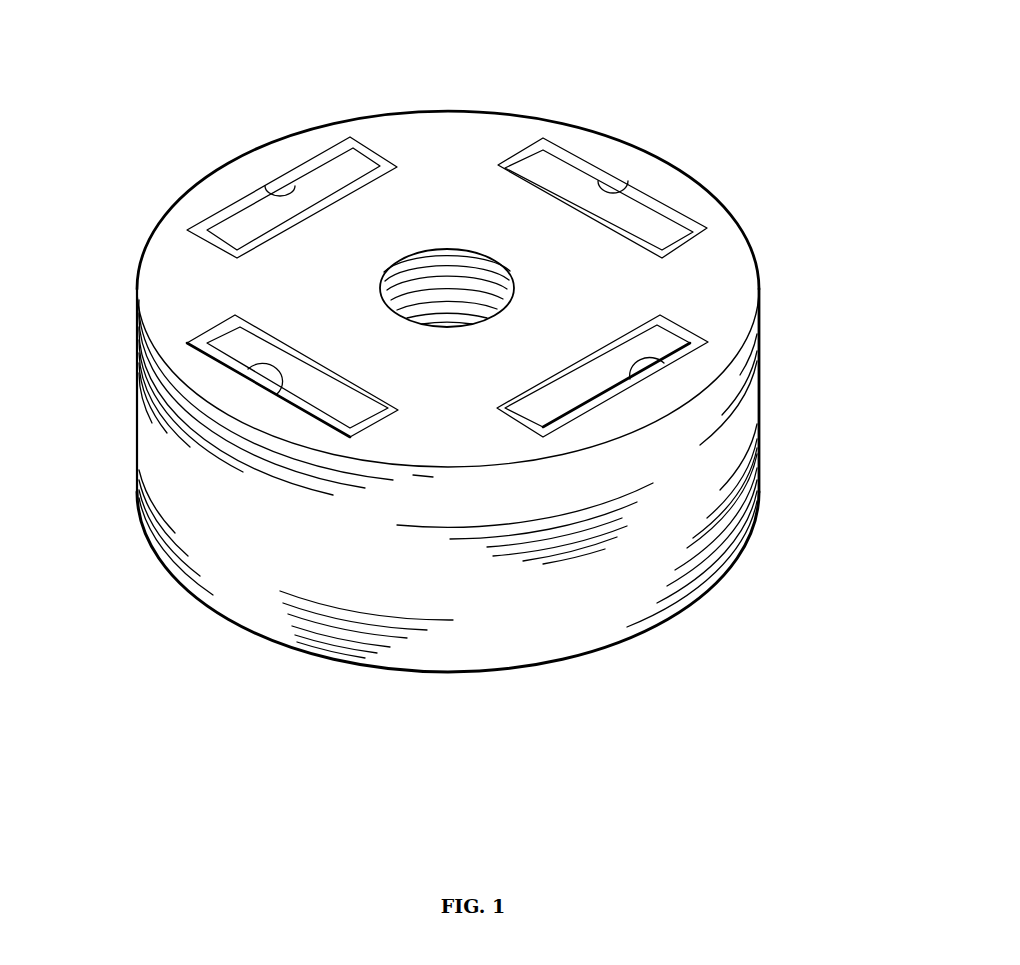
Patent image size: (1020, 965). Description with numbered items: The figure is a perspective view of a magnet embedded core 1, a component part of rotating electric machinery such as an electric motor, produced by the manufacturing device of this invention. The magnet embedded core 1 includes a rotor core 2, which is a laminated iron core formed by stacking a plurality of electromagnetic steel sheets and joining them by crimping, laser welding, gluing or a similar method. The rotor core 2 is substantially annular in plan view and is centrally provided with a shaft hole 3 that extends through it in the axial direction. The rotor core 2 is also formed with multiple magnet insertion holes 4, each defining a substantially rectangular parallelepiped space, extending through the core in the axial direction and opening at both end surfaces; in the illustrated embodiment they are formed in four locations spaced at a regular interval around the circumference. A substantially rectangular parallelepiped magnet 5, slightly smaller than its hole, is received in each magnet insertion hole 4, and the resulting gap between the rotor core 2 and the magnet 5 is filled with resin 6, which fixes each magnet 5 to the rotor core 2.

The magnet embedded core 1 is at (681, 59).
The rotor core 2 is at (700, 182).
The shaft hole 3 is at (478, 286).
The magnet insertion hole 4 is at (295, 186).
The magnet 5 is at (238, 348).
The resin 6 is at (334, 153).